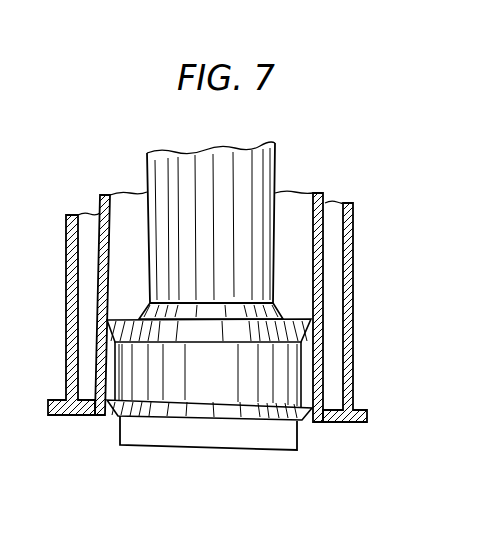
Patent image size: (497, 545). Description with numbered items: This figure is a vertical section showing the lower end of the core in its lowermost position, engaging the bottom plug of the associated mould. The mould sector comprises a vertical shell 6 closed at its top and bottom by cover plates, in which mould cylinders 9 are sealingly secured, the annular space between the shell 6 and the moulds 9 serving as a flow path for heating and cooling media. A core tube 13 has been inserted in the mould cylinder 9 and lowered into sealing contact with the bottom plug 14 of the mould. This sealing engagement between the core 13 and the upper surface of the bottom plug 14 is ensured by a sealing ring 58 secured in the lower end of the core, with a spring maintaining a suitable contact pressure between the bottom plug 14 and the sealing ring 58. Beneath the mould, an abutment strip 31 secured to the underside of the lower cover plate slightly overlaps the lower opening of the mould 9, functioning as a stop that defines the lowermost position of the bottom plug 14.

The vertical shell 6 is at (343, 315).
The mould cylinder 9 is at (323, 240).
The core tube 13 is at (263, 164).
The sealing ring 58 is at (280, 316).
The bottom plug 14 is at (133, 387).
The abutment strip 31 is at (162, 435).